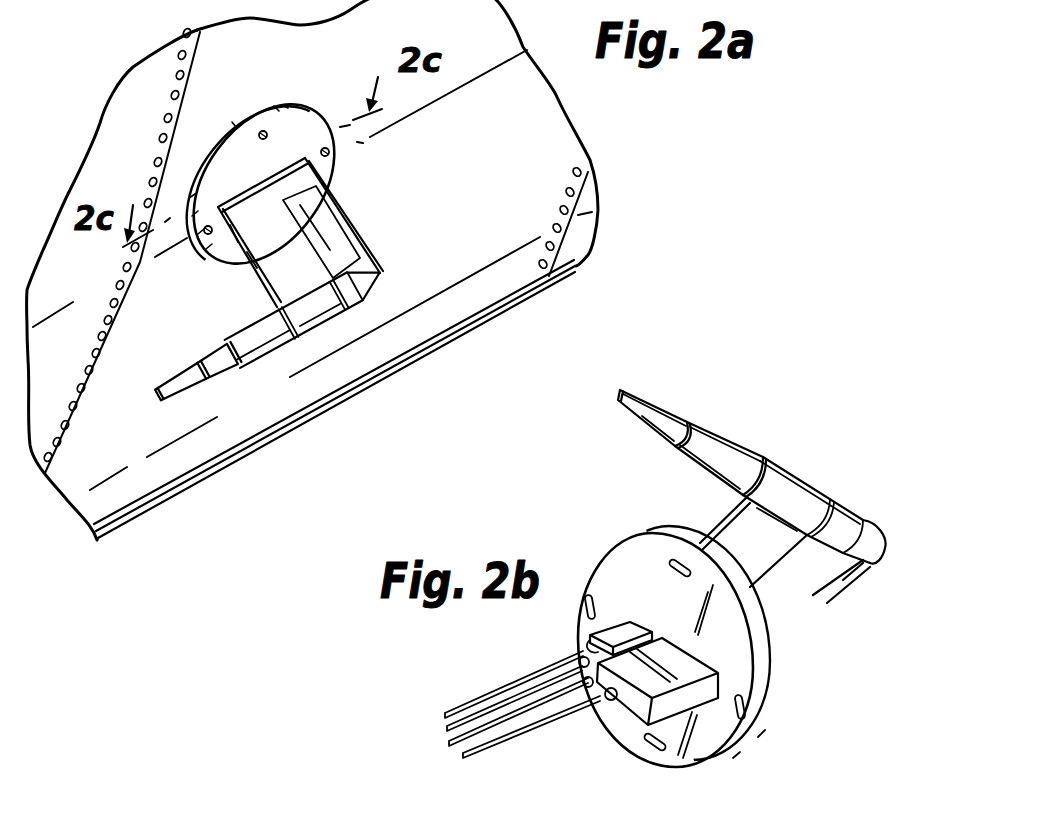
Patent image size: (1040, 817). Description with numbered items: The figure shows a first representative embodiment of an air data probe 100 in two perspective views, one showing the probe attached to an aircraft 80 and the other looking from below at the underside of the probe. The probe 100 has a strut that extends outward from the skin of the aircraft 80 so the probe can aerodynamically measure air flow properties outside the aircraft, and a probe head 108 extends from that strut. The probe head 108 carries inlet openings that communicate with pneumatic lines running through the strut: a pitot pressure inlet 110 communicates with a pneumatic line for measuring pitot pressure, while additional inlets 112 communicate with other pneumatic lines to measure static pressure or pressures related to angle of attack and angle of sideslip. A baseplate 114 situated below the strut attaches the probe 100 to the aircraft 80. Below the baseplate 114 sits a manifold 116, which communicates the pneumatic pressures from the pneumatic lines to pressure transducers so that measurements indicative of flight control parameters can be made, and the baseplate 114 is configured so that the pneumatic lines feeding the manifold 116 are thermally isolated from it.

In FIG. 2A, the aircraft 80 is at (487, 300).
In FIG. 2A, the probe 100 is at (297, 291).
In FIG. 2B, the probe 100 is at (665, 562).
In FIG. 2A, the probe head 108 is at (358, 303).
In FIG. 2B, the probe head 108 is at (749, 446).
In FIG. 2A, the pitot pressure inlet 110 is at (159, 398).
In FIG. 2B, the pitot pressure inlet 110 is at (621, 388).
In FIG. 2A, the additional inlets 112 is at (216, 378).
In FIG. 2B, the additional inlets 112 is at (671, 414).
In FIG. 2A, the baseplate 114 is at (285, 105).
In FIG. 2B, the baseplate 114 is at (753, 725).
In FIG. 2B, the manifold 116 is at (630, 705).